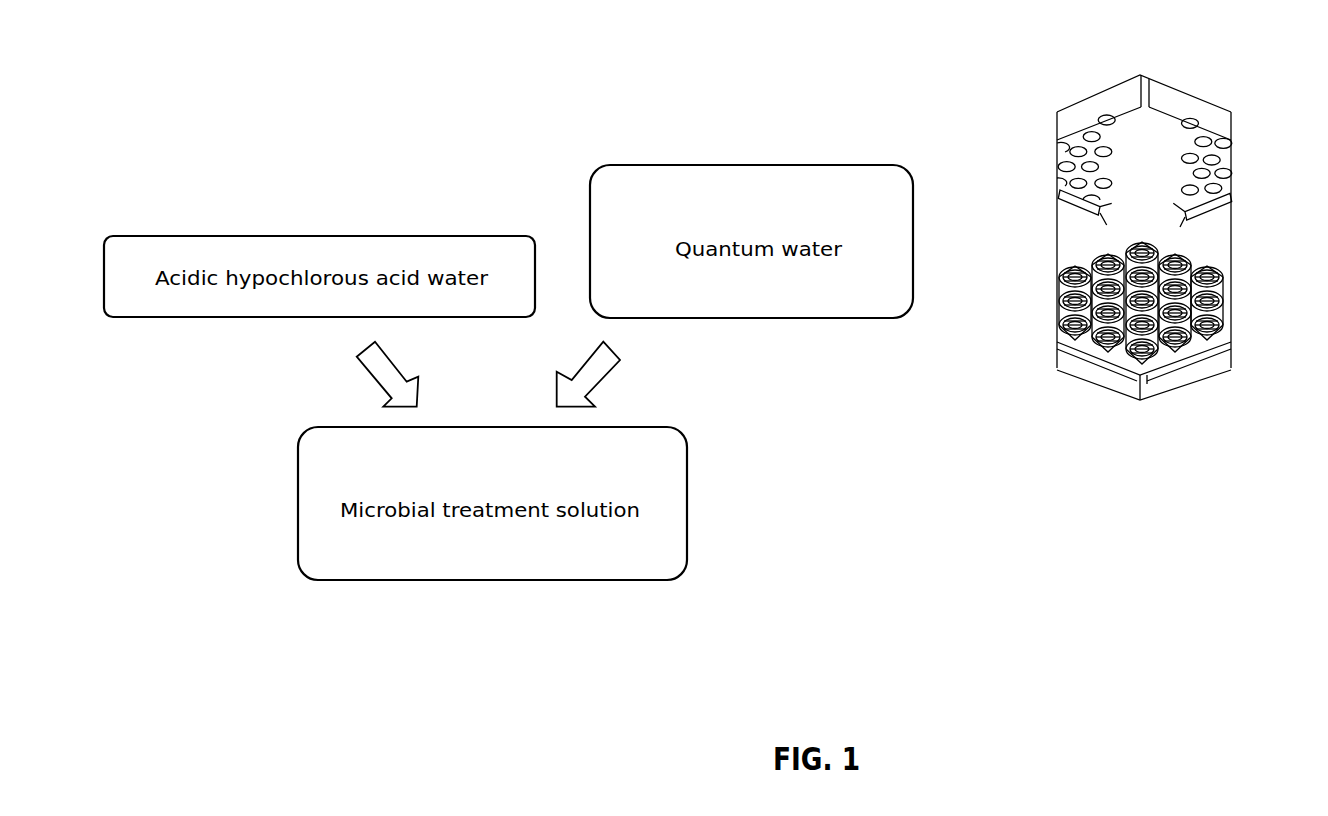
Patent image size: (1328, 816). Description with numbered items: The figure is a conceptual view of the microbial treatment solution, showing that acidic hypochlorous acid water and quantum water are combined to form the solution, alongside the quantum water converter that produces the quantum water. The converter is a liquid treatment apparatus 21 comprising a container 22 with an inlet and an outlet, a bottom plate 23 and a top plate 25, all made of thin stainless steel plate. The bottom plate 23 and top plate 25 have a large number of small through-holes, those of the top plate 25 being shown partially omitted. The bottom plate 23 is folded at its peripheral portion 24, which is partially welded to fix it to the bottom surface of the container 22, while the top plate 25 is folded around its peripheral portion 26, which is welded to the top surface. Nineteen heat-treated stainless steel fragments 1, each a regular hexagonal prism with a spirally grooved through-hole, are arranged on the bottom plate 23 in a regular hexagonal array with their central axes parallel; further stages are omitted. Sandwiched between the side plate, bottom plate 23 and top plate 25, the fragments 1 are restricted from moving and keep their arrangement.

The fragment 1 is at (1058, 318).
The liquid treatment apparatus 21 is at (1048, 98).
The container 22 is at (1231, 227).
The bottom plate 23 is at (1197, 352).
The peripheral portion of the bottom plate 24 is at (1222, 343).
The top plate 25 is at (1231, 157).
The peripheral portion of the top plate 26 is at (1173, 107).